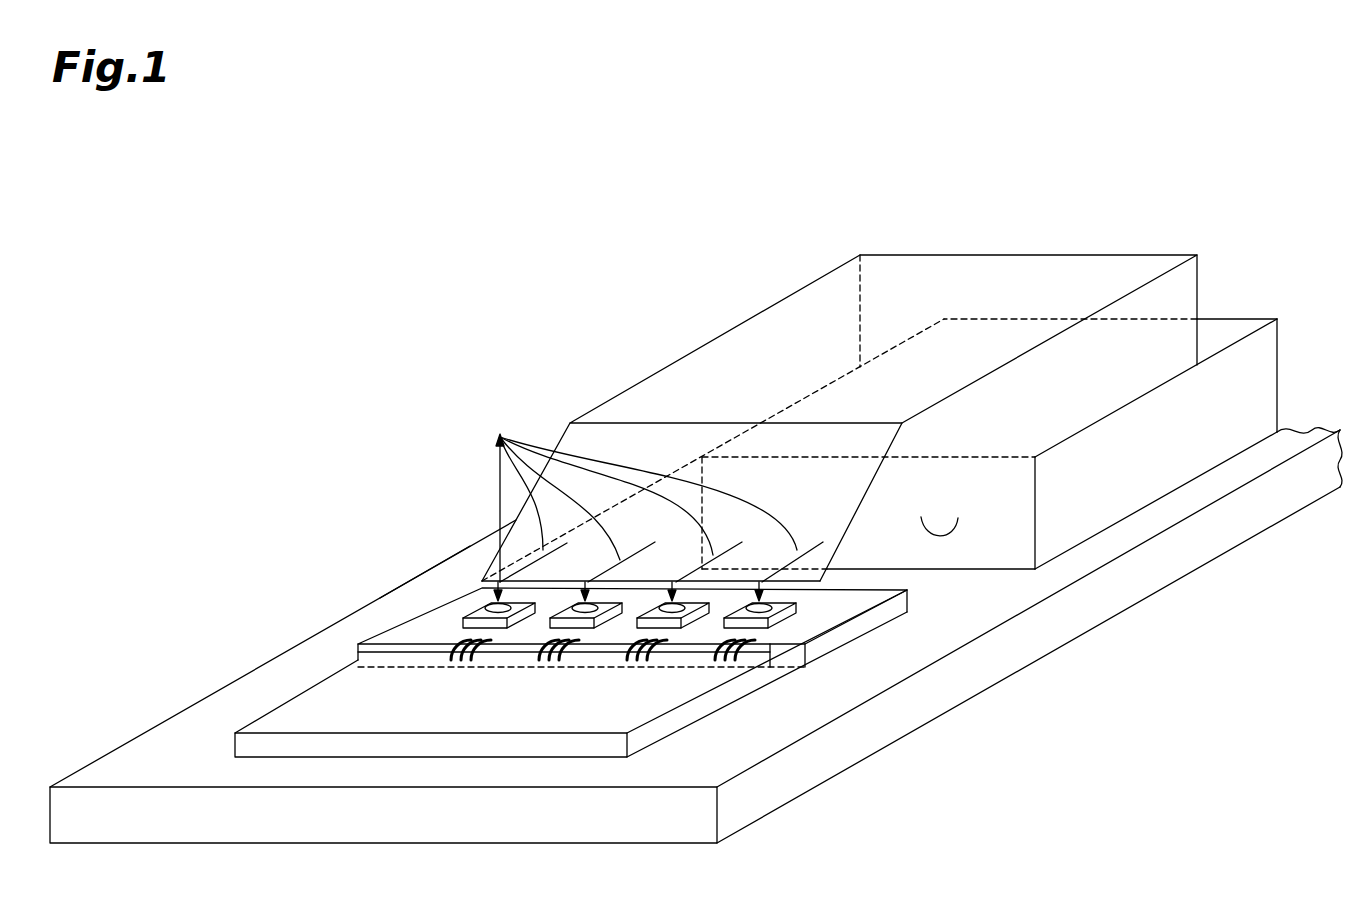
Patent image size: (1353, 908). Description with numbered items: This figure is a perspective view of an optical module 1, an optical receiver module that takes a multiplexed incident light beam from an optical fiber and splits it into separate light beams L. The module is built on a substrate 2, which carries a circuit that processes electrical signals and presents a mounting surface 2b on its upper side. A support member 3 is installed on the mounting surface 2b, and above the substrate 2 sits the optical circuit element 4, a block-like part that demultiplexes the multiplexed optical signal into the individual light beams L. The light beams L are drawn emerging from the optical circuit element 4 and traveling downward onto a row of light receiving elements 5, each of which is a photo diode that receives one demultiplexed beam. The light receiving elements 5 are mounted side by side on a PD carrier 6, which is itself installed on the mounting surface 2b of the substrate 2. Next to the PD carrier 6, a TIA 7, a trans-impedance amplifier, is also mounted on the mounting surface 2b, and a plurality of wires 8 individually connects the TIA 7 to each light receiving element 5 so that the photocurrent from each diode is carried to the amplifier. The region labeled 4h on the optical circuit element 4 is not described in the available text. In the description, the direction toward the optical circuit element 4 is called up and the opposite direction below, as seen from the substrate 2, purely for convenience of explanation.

The optical module 1 is at (912, 155).
The substrate 2 is at (548, 820).
The mounting surface 2b is at (430, 583).
The support member 3 is at (1268, 378).
The optical circuit element 4 is at (712, 350).
The hole in housing 4h is at (950, 522).
The light receiving element 5 is at (548, 607).
The PD carrier 6 is at (907, 600).
The TIA 7 is at (707, 697).
The wires 8 is at (530, 662).
The light beams L is at (657, 496).